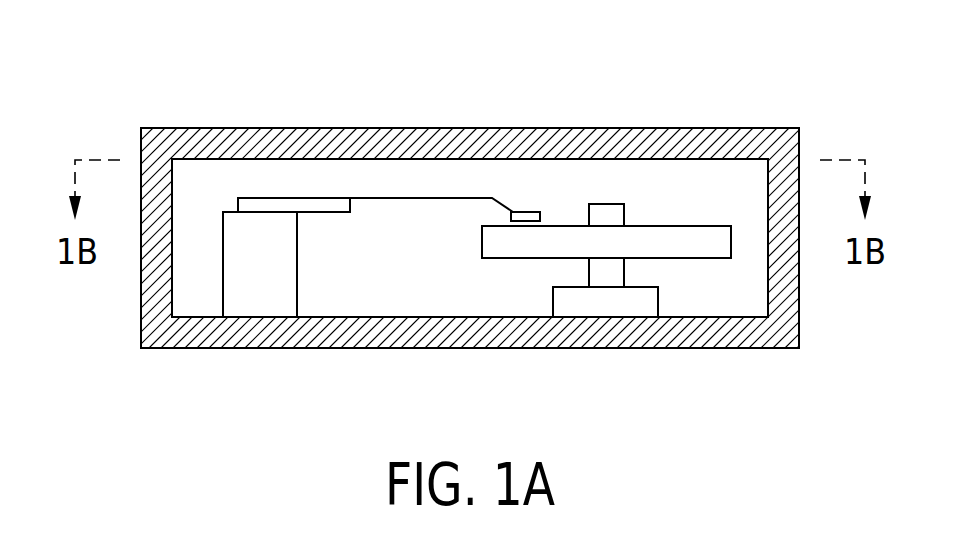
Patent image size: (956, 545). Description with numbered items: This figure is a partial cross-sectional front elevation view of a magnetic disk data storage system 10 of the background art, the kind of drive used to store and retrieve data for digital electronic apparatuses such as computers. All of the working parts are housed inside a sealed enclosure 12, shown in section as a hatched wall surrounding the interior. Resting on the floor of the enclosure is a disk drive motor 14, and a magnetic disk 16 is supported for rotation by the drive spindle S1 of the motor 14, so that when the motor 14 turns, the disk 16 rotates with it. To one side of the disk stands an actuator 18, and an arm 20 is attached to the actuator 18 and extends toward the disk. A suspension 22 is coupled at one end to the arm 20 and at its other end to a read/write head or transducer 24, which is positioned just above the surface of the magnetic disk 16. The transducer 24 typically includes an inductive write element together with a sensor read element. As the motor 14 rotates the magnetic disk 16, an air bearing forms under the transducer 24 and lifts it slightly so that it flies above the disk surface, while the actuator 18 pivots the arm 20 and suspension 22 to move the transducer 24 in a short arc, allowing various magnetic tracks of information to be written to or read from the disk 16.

The magnetic disk data storage system 10 is at (672, 72).
The sealed enclosure 12 is at (520, 337).
The disk drive motor 14 is at (613, 305).
The magnetic disk 16 is at (678, 238).
The actuator 18 is at (277, 261).
The arm 20 is at (318, 203).
The suspension 22 is at (413, 198).
The transducer 24 is at (535, 212).
The drive spindle S1 is at (600, 209).